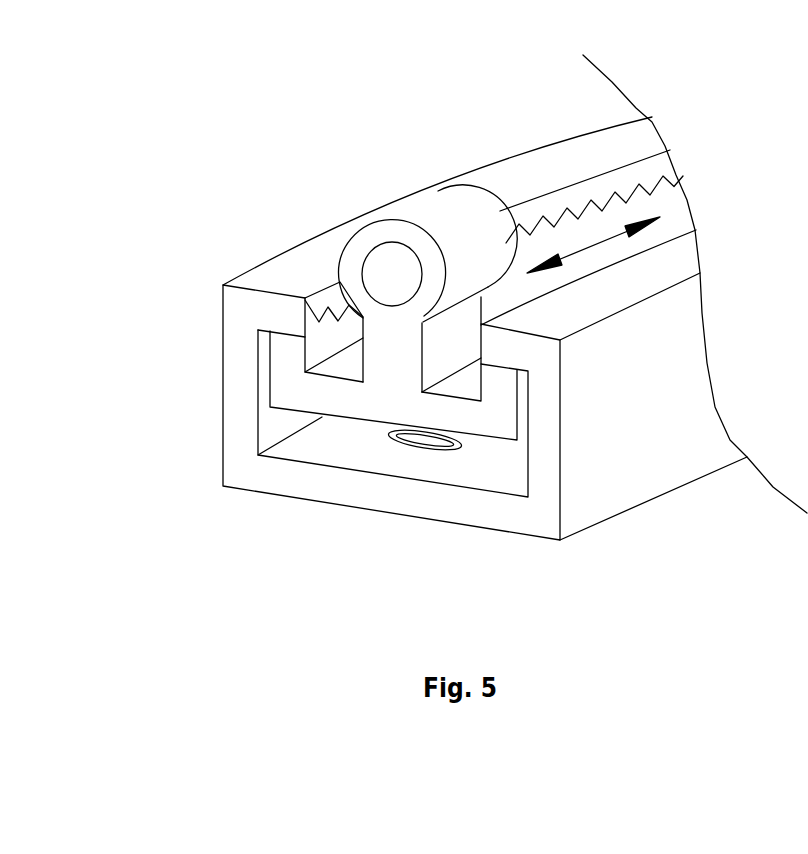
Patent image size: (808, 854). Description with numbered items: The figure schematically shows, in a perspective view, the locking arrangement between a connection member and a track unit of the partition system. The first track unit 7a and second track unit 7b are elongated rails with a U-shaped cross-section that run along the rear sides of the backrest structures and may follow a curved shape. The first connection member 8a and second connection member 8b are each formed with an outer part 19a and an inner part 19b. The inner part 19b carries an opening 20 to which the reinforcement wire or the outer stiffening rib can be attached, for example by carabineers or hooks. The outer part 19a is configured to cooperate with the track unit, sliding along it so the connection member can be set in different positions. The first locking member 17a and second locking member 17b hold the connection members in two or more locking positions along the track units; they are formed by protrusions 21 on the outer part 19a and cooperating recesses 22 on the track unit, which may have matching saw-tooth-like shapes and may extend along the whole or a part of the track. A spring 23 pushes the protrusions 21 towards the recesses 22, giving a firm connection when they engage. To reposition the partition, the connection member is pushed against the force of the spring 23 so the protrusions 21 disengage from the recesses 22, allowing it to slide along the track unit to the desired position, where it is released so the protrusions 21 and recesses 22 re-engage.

The first track unit 7a is at (644, 314).
The second track unit 7b is at (630, 420).
The first connection member 8a is at (428, 203).
The second connection member 8b is at (458, 238).
The first locking member 17a is at (356, 201).
The second locking member 17b is at (233, 262).
The outer part 19a is at (190, 368).
The inner part 19b is at (333, 197).
The opening 20 is at (395, 273).
The protrusions 21 is at (318, 320).
The recesses 22 is at (320, 320).
The spring 23 is at (417, 450).